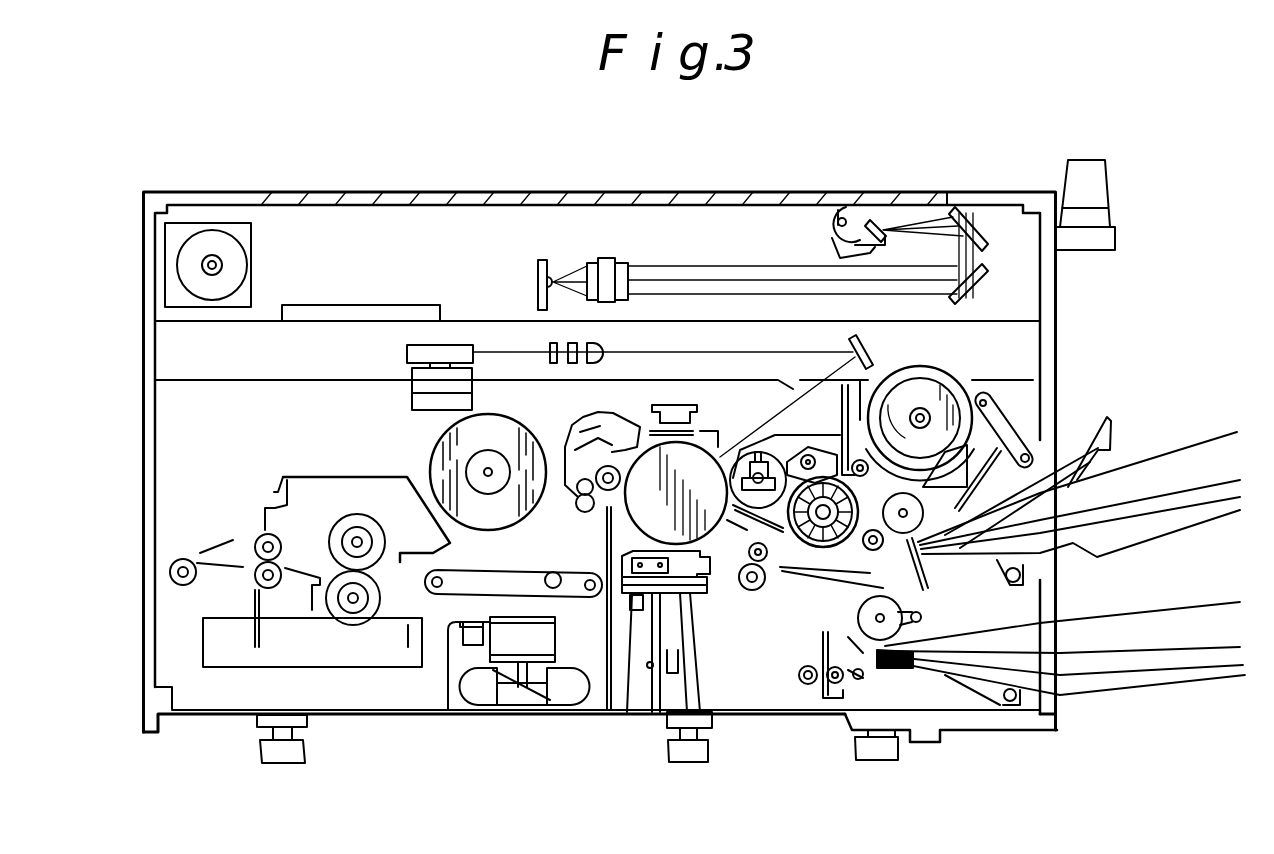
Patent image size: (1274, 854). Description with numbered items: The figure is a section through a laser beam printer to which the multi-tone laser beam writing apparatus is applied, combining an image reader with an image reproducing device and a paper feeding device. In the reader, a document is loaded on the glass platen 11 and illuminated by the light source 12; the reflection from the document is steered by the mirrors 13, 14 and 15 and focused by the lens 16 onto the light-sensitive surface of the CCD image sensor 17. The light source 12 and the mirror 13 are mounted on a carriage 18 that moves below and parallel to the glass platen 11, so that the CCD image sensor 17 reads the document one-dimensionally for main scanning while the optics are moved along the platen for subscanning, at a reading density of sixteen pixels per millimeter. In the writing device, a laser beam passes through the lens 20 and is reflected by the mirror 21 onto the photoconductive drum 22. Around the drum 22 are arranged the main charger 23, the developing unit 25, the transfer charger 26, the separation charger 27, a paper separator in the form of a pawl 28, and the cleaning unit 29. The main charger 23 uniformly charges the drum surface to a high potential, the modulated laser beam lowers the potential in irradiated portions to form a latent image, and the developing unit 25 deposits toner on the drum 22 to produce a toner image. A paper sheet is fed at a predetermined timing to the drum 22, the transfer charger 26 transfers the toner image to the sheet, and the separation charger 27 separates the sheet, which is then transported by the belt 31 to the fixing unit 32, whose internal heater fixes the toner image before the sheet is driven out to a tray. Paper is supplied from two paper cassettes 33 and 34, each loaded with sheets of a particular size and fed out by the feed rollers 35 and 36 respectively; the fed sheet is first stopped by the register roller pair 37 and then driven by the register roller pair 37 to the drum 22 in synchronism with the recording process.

The glass platen 11 is at (922, 192).
The light source 12 is at (843, 215).
The mirror 13 is at (877, 222).
The mirror 14 is at (972, 212).
The mirror 15 is at (983, 286).
The lens 16 is at (608, 258).
The CCD image sensor 17 is at (545, 260).
The carriage 18 is at (845, 252).
The lens 20 is at (548, 337).
The mirror 21 is at (870, 360).
The photoconductive drum 22 is at (713, 530).
The main charger 23 is at (680, 405).
The developing unit 25 is at (782, 548).
The transfer charger 26 is at (697, 600).
The separation charger 27 is at (632, 600).
The pawl 28 is at (608, 600).
The cleaning unit 29 is at (570, 500).
The belt 31 is at (447, 610).
The fixing unit 32 is at (420, 677).
The paper cassette 33 is at (1160, 457).
The paper cassette 34 is at (1148, 626).
The feed roller 35 is at (953, 470).
The feed roller 36 is at (913, 663).
The register roller pair 37 is at (748, 590).